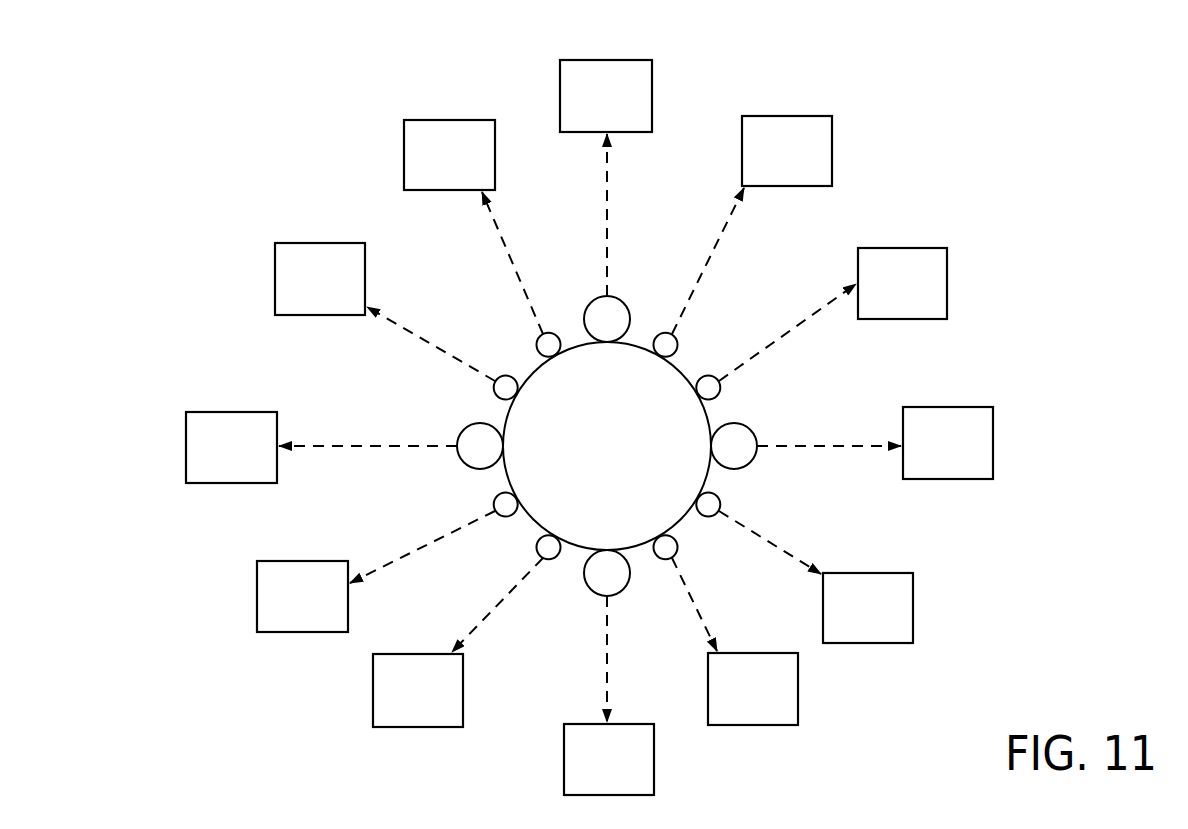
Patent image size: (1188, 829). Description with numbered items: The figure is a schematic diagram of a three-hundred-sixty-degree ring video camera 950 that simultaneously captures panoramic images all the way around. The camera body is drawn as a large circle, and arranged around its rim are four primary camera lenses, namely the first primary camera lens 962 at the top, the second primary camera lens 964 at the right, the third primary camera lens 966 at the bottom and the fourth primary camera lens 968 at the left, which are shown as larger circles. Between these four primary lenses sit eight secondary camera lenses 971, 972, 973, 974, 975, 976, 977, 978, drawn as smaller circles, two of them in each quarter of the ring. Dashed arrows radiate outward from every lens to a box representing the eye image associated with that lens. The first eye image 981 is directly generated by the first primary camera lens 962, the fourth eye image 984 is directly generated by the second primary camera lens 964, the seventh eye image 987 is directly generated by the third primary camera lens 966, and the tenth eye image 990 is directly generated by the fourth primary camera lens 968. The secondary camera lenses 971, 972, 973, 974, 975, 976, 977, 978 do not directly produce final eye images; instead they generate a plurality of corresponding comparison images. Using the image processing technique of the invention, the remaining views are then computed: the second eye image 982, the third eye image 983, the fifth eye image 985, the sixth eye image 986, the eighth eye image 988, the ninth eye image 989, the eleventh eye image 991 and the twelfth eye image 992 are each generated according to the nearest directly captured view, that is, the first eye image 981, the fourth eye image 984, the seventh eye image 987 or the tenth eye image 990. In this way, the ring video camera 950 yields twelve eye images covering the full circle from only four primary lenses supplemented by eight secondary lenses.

The 360-degree ring video camera 950 is at (590, 516).
The first primary camera lens 962 is at (624, 304).
The second primary camera lens 964 is at (757, 440).
The third primary camera lens 966 is at (590, 590).
The fourth primary camera lens 968 is at (459, 462).
The secondary camera lens 971 is at (677, 340).
The secondary camera lens 972 is at (720, 394).
The secondary camera lens 973 is at (720, 502).
The secondary camera lens 974 is at (678, 549).
The secondary camera lens 975 is at (537, 549).
The secondary camera lens 976 is at (494, 504).
The secondary camera lens 977 is at (494, 392).
The secondary camera lens 978 is at (537, 348).
The first eye image 981 is at (558, 98).
The second eye image 982 is at (763, 114).
The third eye image 983 is at (872, 321).
The fourth eye image 984 is at (918, 481).
The fifth eye image 985 is at (838, 645).
The sixth eye image 986 is at (725, 727).
The seventh eye image 987 is at (562, 782).
The eighth eye image 988 is at (388, 729).
The ninth eye image 989 is at (272, 634).
The tenth eye image 990 is at (200, 485).
The eleventh eye image 991 is at (300, 241).
The twelfth eye image 992 is at (424, 118).